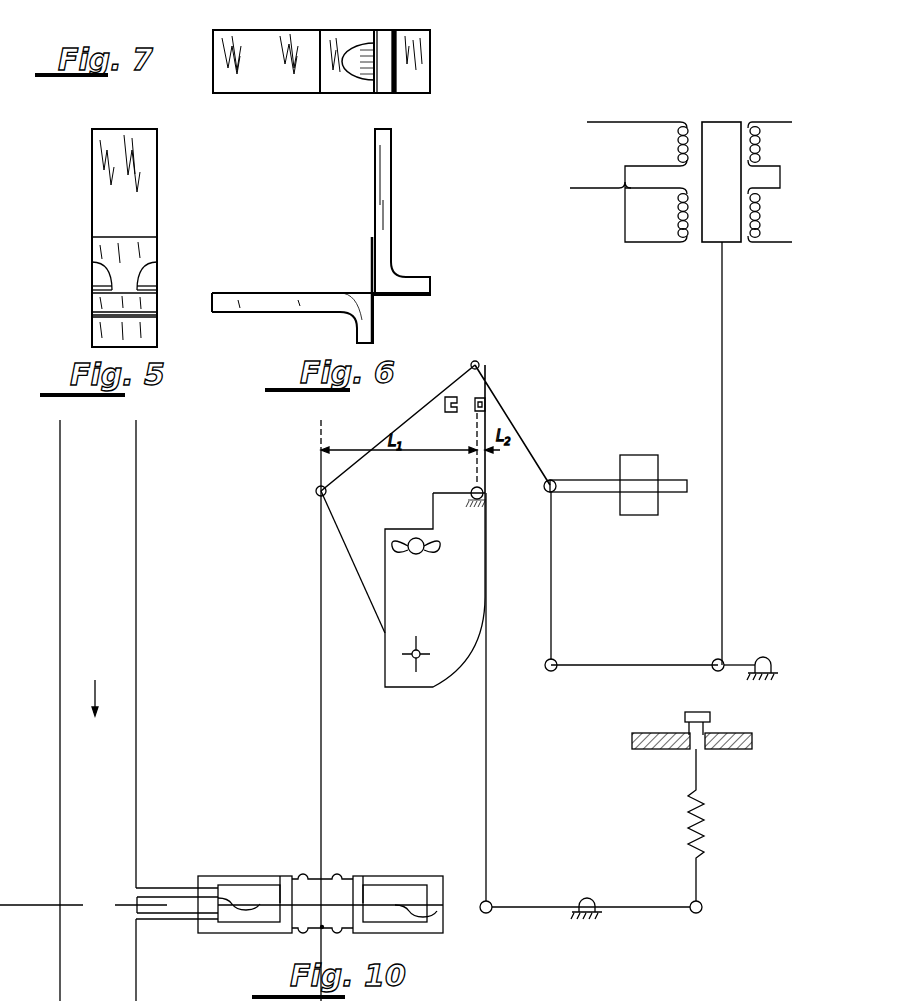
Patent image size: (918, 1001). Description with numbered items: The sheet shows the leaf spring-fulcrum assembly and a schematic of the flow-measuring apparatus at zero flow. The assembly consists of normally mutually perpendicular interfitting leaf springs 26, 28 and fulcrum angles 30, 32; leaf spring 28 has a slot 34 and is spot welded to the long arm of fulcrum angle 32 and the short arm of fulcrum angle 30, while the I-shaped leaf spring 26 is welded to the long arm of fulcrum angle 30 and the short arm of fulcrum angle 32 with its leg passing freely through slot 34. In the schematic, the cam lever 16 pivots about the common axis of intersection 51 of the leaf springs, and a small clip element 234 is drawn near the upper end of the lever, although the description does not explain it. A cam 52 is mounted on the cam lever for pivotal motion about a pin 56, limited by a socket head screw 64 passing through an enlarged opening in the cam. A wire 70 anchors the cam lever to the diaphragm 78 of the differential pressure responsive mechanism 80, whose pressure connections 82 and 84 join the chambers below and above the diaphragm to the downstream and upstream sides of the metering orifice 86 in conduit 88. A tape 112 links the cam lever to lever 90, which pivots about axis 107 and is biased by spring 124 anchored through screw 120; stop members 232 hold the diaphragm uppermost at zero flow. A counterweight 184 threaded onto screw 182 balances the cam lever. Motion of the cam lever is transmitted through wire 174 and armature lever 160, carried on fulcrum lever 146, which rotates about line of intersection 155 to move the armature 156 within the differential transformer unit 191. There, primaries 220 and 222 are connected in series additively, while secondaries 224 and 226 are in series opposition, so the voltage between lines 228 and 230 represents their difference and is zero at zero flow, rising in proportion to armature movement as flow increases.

In FIG. 10, the cam lever 16 is at (362, 518).
In FIG. 5, the leaf spring 26 is at (153, 242).
In FIG. 6, the leaf spring 26 is at (370, 273).
In FIG. 7, the leaf spring 28 is at (330, 92).
In FIG. 5, the leaf spring 28 is at (150, 289).
In FIG. 6, the leaf spring 28 is at (318, 292).
In FIG. 7, the fulcrum angle 30 is at (382, 93).
In FIG. 5, the fulcrum angle 30 is at (153, 183).
In FIG. 6, the fulcrum angle 30 is at (391, 201).
In FIG. 7, the fulcrum angle 32 is at (280, 80).
In FIG. 5, the fulcrum angle 32 is at (160, 301).
In FIG. 6, the fulcrum angle 32 is at (238, 302).
In FIG. 7, the slot 34 is at (364, 78).
In FIG. 10, the common axis of intersection 51 is at (476, 500).
In FIG. 10, the cam 52 is at (458, 659).
In FIG. 10, the pin 56 is at (419, 651).
In FIG. 10, the socket head screw 64 is at (415, 552).
In FIG. 10, the wire 70 is at (323, 774).
In FIG. 10, the diaphragm 78 is at (384, 910).
In FIG. 10, the differential pressure responsive mechanism 80 is at (206, 876).
In FIG. 10, the pressure connection 82 is at (168, 919).
In FIG. 10, the pressure connection 84 is at (161, 887).
In FIG. 10, the metering orifice 86 is at (73, 903).
In FIG. 10, the conduit 88 is at (130, 747).
In FIG. 10, the lever 90 is at (545, 907).
In FIG. 10, the axis 107 is at (590, 900).
In FIG. 10, the tape 112 is at (487, 774).
In FIG. 10, the screw 120 is at (710, 728).
In FIG. 10, the spring 124 is at (698, 811).
In FIG. 10, the fulcrum lever 146 is at (736, 662).
In FIG. 10, the line of intersection 155 is at (772, 659).
In FIG. 10, the armature 156 is at (741, 127).
In FIG. 10, the armature lever 160 is at (629, 665).
In FIG. 10, the wire 174 is at (552, 578).
In FIG. 10, the threaded screw 182 is at (684, 480).
In FIG. 10, the counterweight 184 is at (651, 461).
In FIG. 10, the differential transformer unit 191 is at (711, 112).
In FIG. 10, the primary coil 220 is at (760, 146).
In FIG. 10, the primary coil 222 is at (760, 216).
In FIG. 10, the secondary coil 224 is at (680, 143).
In FIG. 10, the secondary coil 226 is at (677, 215).
In FIG. 10, the line 228 is at (602, 122).
In FIG. 10, the line 230 is at (592, 187).
In FIG. 10, the stop members 232 is at (283, 885).
In FIG. 10, the clip 234 is at (449, 392).